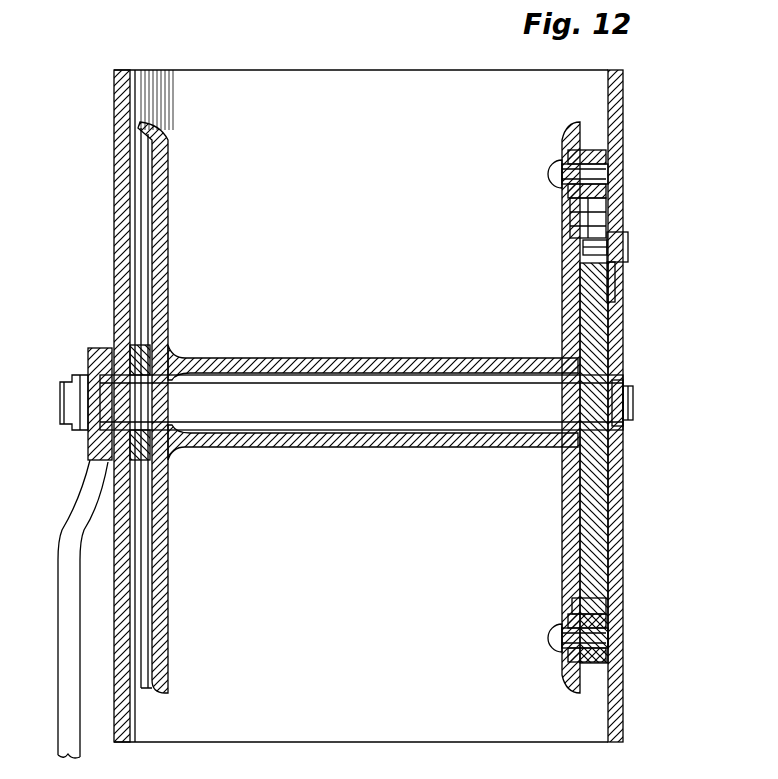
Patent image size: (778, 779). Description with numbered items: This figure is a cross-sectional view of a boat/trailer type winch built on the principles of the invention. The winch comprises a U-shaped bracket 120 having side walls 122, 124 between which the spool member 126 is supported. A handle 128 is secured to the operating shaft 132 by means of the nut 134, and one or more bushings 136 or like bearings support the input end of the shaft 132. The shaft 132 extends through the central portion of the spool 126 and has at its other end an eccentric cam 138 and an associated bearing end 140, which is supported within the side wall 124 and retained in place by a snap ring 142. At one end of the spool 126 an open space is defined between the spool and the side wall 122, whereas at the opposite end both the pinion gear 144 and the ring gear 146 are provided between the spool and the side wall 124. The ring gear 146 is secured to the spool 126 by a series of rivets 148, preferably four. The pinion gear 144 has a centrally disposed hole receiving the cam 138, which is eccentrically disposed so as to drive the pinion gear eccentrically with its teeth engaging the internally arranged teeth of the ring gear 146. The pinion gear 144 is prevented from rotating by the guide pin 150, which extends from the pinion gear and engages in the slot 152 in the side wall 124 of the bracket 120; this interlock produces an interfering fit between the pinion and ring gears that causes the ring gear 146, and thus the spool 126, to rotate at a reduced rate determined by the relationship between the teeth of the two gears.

The U-shaped bracket 120 is at (406, 96).
The side wall 122 is at (118, 136).
The side wall 124 is at (618, 122).
The spool member 126 is at (478, 356).
The handle 128 is at (58, 588).
The operating shaft 132 is at (228, 390).
The nut 134 is at (86, 372).
The bushing 136 is at (170, 488).
The eccentric cam 138 is at (600, 388).
The bearing end 140 is at (634, 398).
The snap ring 142 is at (628, 428).
The pinion gear 144 is at (570, 296).
The ring gear 146 is at (566, 160).
The rivet 148 is at (556, 178).
The guide pin 150 is at (628, 246).
The slot 152 is at (614, 284).